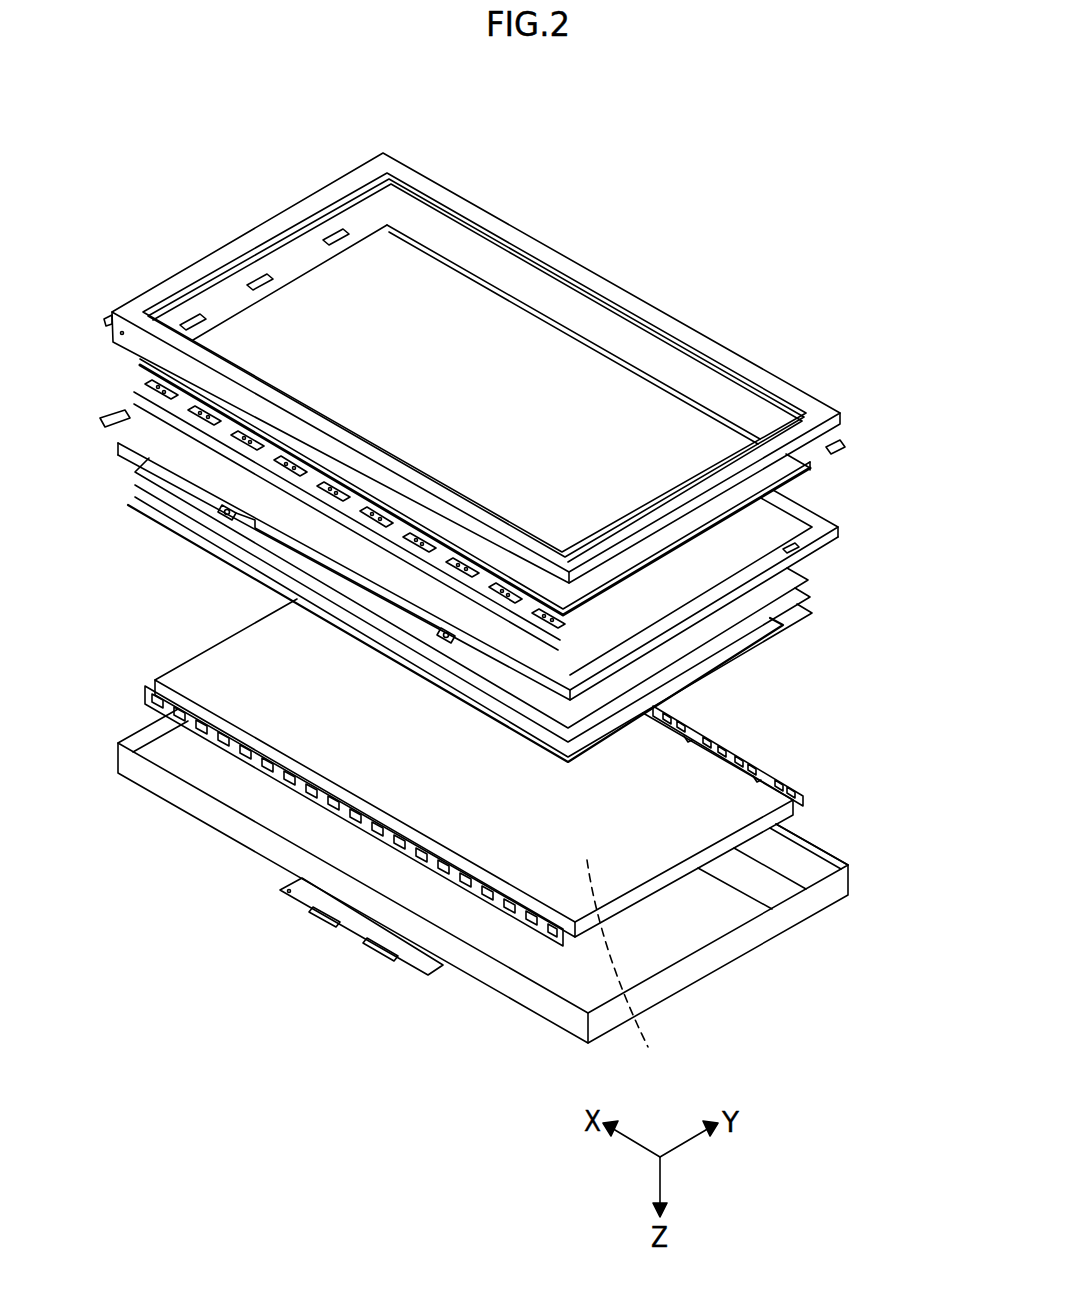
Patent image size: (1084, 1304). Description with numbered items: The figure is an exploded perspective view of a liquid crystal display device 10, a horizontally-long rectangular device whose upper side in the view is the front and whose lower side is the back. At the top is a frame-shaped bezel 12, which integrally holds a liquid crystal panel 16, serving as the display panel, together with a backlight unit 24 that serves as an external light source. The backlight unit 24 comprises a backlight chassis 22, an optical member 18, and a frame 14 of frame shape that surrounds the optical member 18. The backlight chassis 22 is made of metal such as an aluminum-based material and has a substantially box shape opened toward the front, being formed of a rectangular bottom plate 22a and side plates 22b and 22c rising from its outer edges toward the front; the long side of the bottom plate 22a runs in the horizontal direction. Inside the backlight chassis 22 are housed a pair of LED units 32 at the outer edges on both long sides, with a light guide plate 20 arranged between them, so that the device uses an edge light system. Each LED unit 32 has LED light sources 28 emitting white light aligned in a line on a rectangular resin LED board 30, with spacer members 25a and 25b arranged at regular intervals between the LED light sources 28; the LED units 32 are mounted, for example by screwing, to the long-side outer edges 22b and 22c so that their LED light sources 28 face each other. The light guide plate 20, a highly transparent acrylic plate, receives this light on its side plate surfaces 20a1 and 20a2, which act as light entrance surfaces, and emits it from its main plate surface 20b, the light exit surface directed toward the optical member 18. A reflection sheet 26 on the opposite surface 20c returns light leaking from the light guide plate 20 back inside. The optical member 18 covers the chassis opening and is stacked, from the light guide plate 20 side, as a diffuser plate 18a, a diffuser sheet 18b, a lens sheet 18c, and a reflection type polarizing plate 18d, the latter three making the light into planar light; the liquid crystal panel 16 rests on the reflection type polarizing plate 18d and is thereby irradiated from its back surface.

The liquid crystal display device 10 is at (660, 238).
The bezel 12 is at (569, 258).
The frame 14 is at (822, 515).
The liquid crystal panel 16 is at (465, 268).
The optical member 18 is at (870, 556).
The diffuser plate 18a is at (782, 626).
The diffuser sheet 18b is at (788, 607).
The lens sheet 18c is at (797, 589).
The reflection type polarizing plate 18d is at (800, 576).
The light guide plate 20 is at (693, 860).
The side plate surface (light entrance surface) 20a1 is at (313, 770).
The side plate surface (light entrance surface) 20a2 is at (790, 810).
The main plate surface (light exit surface) 20b is at (258, 647).
The surface opposite to the surface facing the diffuser plate 20c is at (630, 970).
The backlight chassis 22 is at (537, 1007).
The bottom plate 22a is at (497, 953).
The side plate (long-side outer edge) 22b is at (430, 942).
The side plate (long-side outer edge) 22c is at (817, 867).
The backlight unit 24 is at (243, 985).
The spacer member 25a is at (252, 760).
The spacer member 25b is at (695, 728).
The reflection sheet 26 is at (790, 897).
The LED light source 28 is at (747, 758).
The LED board 30 is at (800, 797).
The LED unit 32 is at (870, 688).